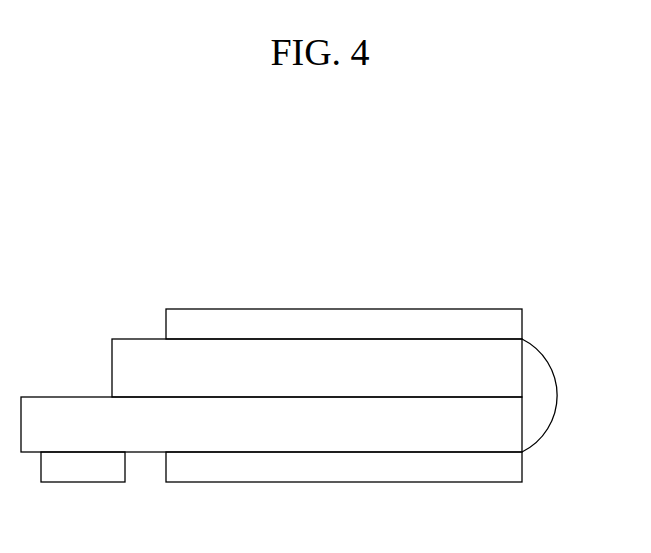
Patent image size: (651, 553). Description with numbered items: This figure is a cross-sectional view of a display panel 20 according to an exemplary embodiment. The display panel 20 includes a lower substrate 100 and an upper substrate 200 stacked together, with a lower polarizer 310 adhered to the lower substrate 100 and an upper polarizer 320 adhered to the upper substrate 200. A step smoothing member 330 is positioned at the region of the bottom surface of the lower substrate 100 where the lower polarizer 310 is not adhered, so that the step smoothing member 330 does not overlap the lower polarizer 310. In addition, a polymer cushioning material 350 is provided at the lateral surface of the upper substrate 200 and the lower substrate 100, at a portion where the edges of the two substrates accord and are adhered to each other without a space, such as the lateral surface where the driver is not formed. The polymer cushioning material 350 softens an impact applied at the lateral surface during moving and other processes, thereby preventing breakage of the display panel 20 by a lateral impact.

The display panel 20 is at (72, 246).
The lower substrate 100 is at (518, 412).
The upper substrate 200 is at (518, 360).
The lower polarizer 310 is at (518, 460).
The upper polarizer 320 is at (518, 323).
The step smoothing member 330 is at (84, 485).
The polymer cushioning material 350 is at (558, 390).